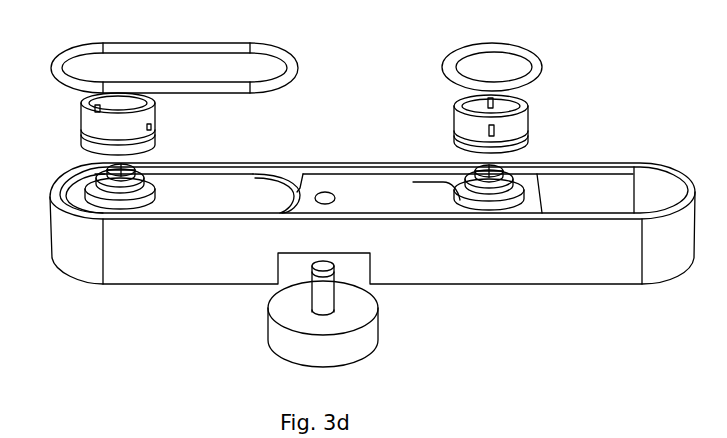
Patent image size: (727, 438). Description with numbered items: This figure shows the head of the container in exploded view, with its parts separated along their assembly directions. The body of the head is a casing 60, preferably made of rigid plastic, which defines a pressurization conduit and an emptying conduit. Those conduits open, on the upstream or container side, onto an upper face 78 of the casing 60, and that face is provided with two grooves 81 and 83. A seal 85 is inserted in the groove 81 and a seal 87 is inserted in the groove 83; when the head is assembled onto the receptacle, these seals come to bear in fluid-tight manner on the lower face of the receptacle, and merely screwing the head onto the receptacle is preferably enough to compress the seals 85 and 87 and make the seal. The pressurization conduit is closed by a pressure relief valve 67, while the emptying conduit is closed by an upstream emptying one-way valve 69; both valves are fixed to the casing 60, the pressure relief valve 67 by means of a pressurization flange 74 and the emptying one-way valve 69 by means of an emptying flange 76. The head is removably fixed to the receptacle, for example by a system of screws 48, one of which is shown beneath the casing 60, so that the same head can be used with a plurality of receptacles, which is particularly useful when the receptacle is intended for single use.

The screws 48 is at (357, 338).
The casing 60 is at (605, 263).
The pressure relief valve 67 is at (485, 166).
The upstream emptying one-way valve 69 is at (110, 163).
The pressurization flange 74 is at (528, 116).
The emptying flange 76 is at (156, 121).
The upper face 78 is at (223, 193).
The groove 81 is at (420, 182).
The groove 83 is at (323, 178).
The seal 85 is at (542, 64).
The seal 87 is at (296, 62).